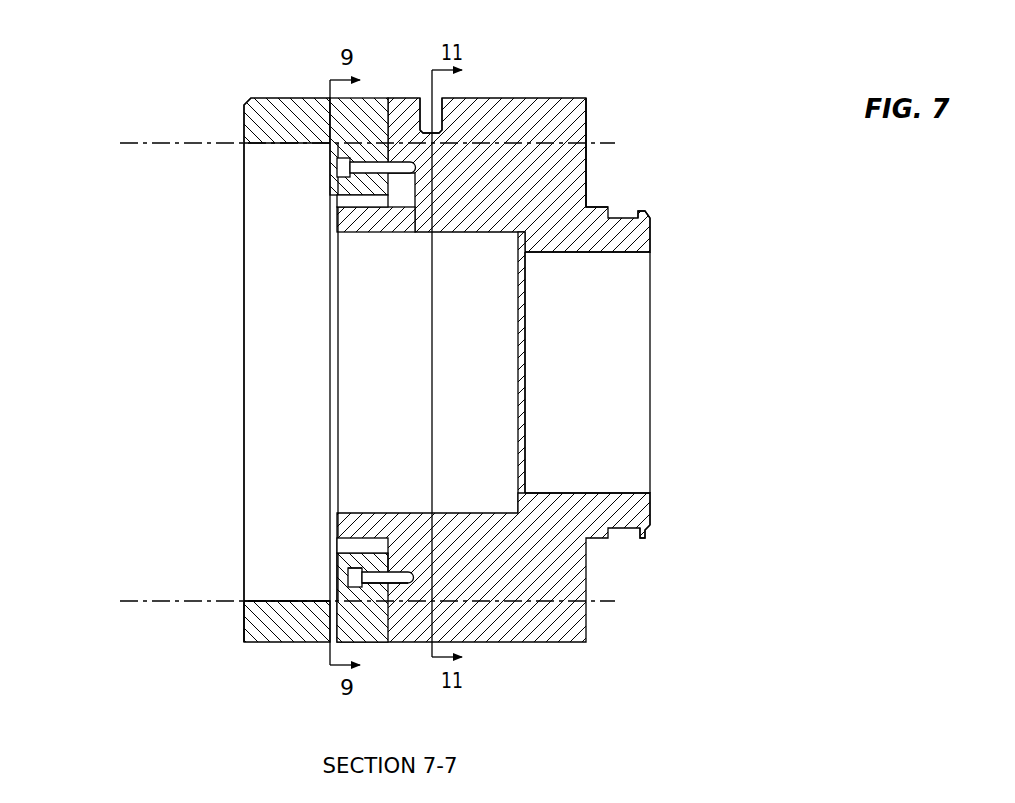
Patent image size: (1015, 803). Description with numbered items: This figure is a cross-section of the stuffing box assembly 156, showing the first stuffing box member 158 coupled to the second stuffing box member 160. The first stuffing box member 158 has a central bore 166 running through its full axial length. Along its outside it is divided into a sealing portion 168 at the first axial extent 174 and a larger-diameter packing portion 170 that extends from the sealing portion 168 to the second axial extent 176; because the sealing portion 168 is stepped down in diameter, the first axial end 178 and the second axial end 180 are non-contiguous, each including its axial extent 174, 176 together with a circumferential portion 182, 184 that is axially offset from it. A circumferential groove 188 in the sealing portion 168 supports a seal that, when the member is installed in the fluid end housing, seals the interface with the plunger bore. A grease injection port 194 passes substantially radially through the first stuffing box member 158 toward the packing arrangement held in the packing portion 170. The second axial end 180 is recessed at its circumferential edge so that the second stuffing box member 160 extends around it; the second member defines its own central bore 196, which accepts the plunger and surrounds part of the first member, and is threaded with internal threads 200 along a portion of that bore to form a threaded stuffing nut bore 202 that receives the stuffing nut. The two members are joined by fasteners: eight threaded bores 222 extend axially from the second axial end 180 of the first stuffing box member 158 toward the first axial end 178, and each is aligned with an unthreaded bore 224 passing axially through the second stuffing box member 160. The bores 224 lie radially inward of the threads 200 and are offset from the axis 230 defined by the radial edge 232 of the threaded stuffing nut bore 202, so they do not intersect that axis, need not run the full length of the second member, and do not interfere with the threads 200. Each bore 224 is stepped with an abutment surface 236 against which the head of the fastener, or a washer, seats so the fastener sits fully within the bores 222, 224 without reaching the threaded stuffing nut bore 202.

The stuffing box assembly 156 is at (205, 118).
The first stuffing box member 158 is at (546, 97).
The second stuffing box member 160 is at (281, 97).
The central bore 166 is at (552, 493).
The sealing portion 168 is at (635, 510).
The packing portion 170 is at (562, 627).
The first axial extent 174 is at (652, 242).
The second axial extent 176 is at (337, 526).
The first axial end 178 is at (690, 75).
The second axial end 180 is at (403, 133).
The circumferential portion 182 is at (586, 112).
The circumferential portion 184 is at (383, 627).
The circumferential groove 188 is at (636, 212).
The grease injection port 194 is at (425, 105).
The central bore 196 is at (280, 202).
The internal threads 200 is at (262, 600).
The threaded stuffing nut bore 202 is at (270, 323).
The threaded bore 222 is at (410, 585).
The bore 224 is at (360, 587).
The axis 230 is at (160, 150).
The radial edge 232 is at (260, 605).
The abutment surface 236 is at (345, 572).